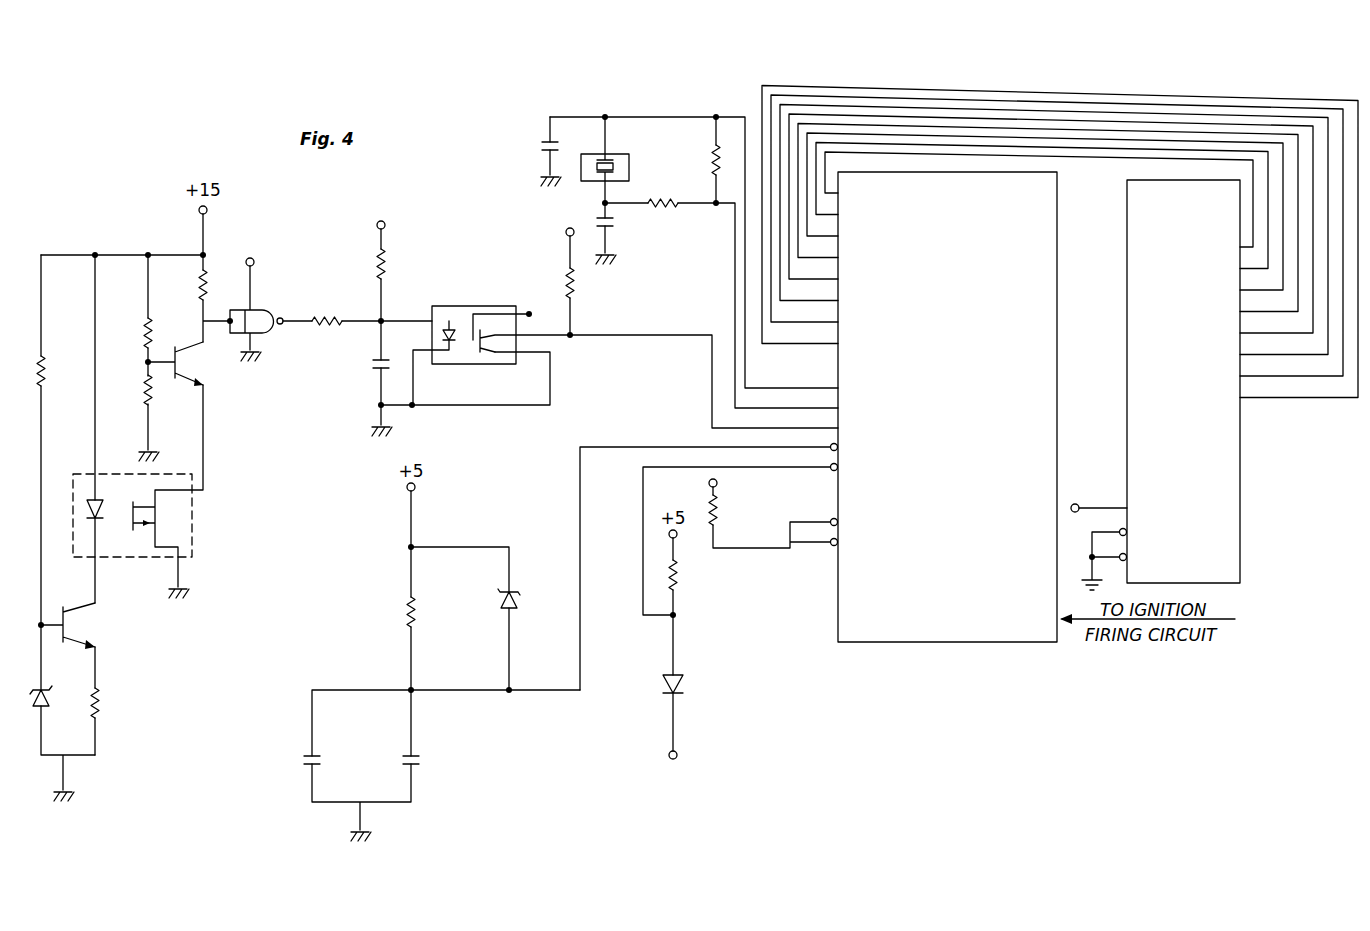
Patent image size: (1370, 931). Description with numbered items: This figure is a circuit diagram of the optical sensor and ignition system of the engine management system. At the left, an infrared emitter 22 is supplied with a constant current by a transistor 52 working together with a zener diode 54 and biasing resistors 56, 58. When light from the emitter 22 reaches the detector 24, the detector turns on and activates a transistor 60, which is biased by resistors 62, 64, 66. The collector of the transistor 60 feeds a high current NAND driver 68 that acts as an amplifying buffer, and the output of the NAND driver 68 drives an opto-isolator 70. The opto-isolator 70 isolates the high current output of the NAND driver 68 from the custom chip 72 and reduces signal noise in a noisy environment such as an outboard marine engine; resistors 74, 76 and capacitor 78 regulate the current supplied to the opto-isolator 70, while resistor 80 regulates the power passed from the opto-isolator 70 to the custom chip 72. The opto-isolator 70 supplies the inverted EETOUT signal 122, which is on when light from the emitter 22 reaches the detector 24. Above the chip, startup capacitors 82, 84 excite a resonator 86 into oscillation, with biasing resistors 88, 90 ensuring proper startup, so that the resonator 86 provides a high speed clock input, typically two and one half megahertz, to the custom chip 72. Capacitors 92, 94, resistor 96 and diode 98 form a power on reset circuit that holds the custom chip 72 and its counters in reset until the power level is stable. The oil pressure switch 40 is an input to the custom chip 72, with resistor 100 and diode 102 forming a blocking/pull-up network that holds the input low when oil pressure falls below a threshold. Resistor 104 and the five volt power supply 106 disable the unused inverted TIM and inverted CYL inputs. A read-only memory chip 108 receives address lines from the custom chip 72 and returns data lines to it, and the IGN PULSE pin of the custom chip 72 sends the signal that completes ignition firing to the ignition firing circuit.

The emitter 22 is at (84, 505).
The detector 24 is at (170, 490).
The oil pressure switch 40 is at (700, 772).
The transistor 52 is at (85, 624).
The zener diode 54 is at (50, 705).
The biasing resistor 56 is at (50, 366).
The biasing resistor 58 is at (100, 702).
The transistor 60 is at (194, 363).
The biasing resistor 62 is at (136, 333).
The biasing resistor 64 is at (136, 388).
The biasing resistor 66 is at (195, 285).
The high current NAND driver 68 is at (268, 307).
The opto-isolator 70 is at (464, 306).
The custom chip 72 is at (1058, 180).
The resistor 74 is at (387, 271).
The resistor 76 is at (328, 312).
The capacitor 78 is at (366, 363).
The resistor 80 is at (580, 285).
The startup capacitor 82 is at (618, 226).
The startup capacitor 84 is at (540, 148).
The resonator 86 is at (628, 153).
The biasing resistor 88 is at (720, 150).
The biasing resistor 90 is at (655, 196).
The capacitor 92 is at (296, 762).
The capacitor 94 is at (428, 768).
The resistor 96 is at (425, 605).
The diode 98 is at (528, 604).
The resistor 100 is at (685, 578).
The diode 102 is at (688, 683).
The resistor 104 is at (722, 505).
The 5 v power supply 106 is at (717, 483).
The read-only memory chip 108 is at (1200, 191).
The inverted EETOUT signal 122 is at (644, 336).